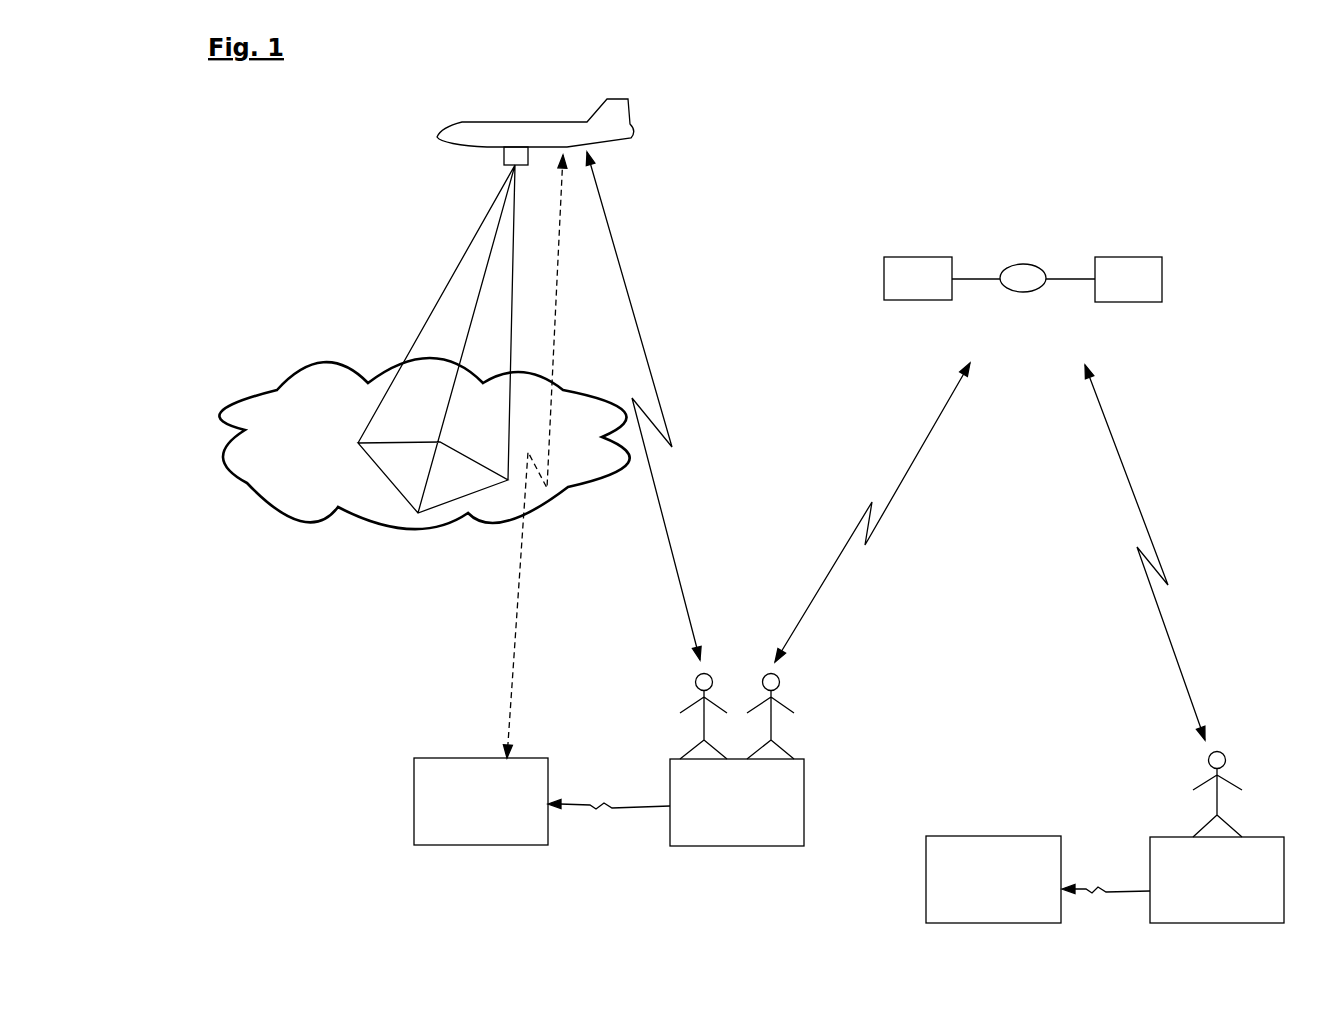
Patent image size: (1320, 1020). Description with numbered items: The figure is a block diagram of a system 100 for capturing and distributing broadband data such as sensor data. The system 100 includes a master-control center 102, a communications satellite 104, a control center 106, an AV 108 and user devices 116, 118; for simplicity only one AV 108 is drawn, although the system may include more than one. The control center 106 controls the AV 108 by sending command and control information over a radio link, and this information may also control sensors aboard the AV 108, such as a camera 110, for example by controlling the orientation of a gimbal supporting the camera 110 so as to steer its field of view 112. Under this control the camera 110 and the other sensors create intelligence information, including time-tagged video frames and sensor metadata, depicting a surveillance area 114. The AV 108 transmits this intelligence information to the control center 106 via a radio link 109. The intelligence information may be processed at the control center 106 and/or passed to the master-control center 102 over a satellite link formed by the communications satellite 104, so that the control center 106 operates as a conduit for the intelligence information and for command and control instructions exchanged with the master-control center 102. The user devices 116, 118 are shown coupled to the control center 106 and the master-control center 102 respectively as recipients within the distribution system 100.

The system 100 is at (902, 49).
The master-control center 102 is at (1257, 835).
The communications satellite 104 is at (1023, 265).
The control center 106 is at (797, 758).
The AV 108 is at (637, 117).
The radio link 109 is at (652, 378).
The camera 110 is at (500, 156).
The field of view 112 is at (436, 339).
The surveillance area 114 is at (363, 522).
The user device 116 is at (993, 835).
The user device 118 is at (527, 758).